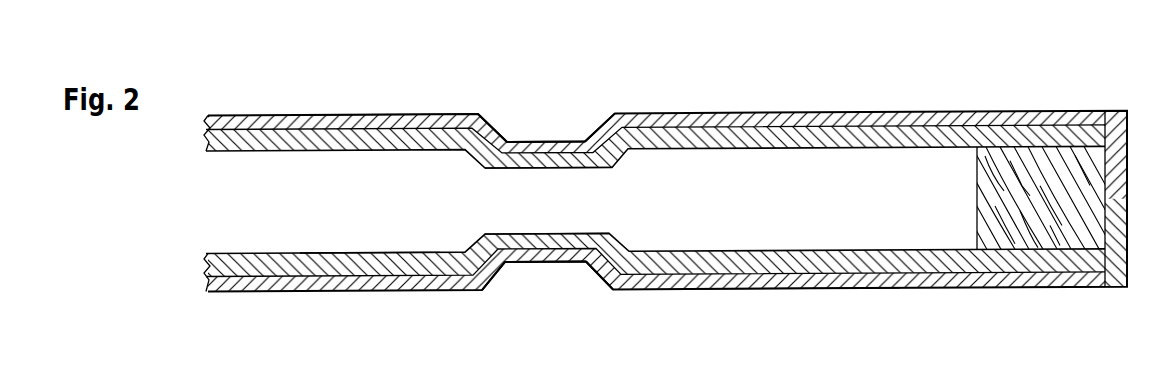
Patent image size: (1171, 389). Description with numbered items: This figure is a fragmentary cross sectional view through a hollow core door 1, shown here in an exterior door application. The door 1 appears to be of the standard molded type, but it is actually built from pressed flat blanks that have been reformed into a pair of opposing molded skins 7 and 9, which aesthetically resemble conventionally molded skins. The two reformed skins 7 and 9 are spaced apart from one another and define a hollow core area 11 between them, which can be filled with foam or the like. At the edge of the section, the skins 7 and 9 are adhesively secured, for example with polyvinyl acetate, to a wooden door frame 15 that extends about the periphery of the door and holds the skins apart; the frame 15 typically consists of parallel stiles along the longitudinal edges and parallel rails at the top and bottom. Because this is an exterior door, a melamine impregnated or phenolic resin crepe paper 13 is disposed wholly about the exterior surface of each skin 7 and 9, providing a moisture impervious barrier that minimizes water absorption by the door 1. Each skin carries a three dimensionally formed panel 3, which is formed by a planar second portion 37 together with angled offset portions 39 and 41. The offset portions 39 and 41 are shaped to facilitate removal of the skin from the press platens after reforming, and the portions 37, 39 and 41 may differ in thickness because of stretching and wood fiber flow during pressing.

The hollow core door 1 is at (1043, 90).
The panel 3 is at (568, 95).
The reformed skin 7 is at (917, 122).
The reformed skin 9 is at (935, 260).
The hollow core area 11 is at (367, 217).
The crepe paper 13 is at (320, 123).
The door frame 15 is at (1010, 189).
The planar second portion 37 is at (528, 162).
The angled offset portion 39 is at (598, 137).
The angled offset portion 41 is at (488, 137).